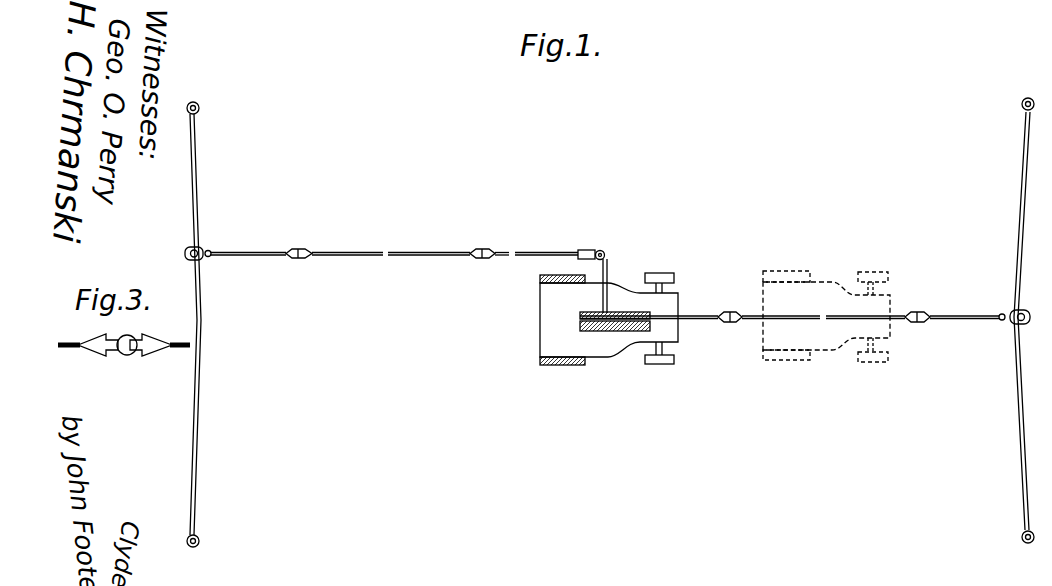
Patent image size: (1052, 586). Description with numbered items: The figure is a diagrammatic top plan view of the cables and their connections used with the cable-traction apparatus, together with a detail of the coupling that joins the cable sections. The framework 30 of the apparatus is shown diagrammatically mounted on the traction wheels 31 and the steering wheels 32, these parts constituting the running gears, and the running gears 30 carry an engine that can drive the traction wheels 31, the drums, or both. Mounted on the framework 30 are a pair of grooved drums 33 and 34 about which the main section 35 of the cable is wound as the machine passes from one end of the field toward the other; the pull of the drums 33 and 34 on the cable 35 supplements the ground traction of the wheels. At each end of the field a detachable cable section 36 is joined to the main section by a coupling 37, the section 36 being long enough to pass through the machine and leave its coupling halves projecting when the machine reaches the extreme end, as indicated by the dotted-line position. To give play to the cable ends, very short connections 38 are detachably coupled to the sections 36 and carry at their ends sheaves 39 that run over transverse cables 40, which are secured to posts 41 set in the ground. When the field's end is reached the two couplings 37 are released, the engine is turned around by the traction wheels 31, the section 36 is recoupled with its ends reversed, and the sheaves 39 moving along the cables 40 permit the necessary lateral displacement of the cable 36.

In FIG. 1, the framework 30 is at (546, 338).
In FIG. 1, the traction wheels 31 is at (543, 276).
In FIG. 1, the steering wheels 32 is at (680, 263).
In FIG. 1, the grooved drum 33 is at (586, 312).
In FIG. 1, the grooved drum 34 is at (630, 327).
In FIG. 1, the main section of the cable 35 is at (712, 322).
In FIG. 1, the detachable cable section 36 is at (395, 256).
In FIG. 3, the detachable cable section 36 is at (181, 355).
In FIG. 1, the coupling 37 is at (322, 243).
In FIG. 3, the coupling 37 is at (128, 356).
In FIG. 1, the short connection 38 is at (248, 246).
In FIG. 3, the short connection 38 is at (75, 373).
In FIG. 1, the sheave 39 is at (190, 262).
In FIG. 1, the transverse cable 40 is at (198, 196).
In FIG. 1, the post 41 is at (1036, 90).